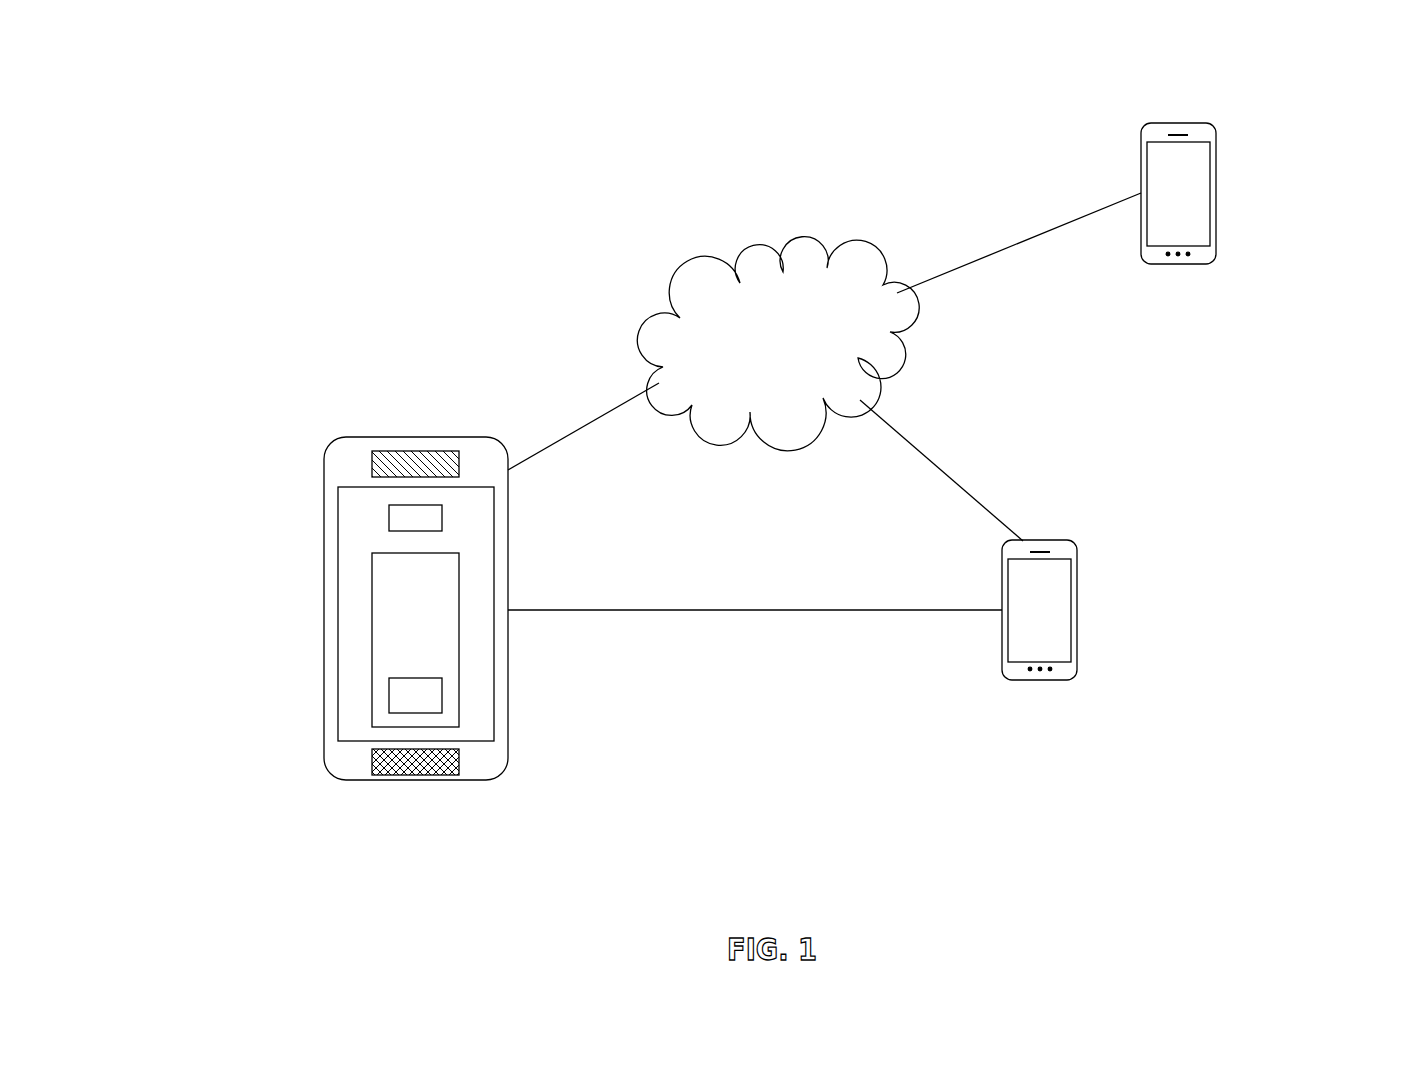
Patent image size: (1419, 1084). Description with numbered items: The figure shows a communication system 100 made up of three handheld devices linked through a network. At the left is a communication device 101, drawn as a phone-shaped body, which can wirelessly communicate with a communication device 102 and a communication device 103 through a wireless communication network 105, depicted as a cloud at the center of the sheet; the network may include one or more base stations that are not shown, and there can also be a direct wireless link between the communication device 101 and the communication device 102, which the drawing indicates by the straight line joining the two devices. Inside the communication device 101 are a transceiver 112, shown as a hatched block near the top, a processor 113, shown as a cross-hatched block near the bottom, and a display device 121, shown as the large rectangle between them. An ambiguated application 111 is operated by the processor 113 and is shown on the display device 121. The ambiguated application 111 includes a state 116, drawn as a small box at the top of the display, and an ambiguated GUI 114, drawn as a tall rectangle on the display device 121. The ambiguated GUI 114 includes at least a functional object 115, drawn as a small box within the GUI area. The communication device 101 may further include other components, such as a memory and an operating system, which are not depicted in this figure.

The communication system 100 is at (1072, 69).
The communication device 101 is at (415, 613).
The communication device 102 is at (1077, 645).
The communication device 103 is at (1216, 223).
The wireless communication network 105 is at (778, 344).
The ambiguated application 111 is at (350, 585).
The transceiver 112 is at (405, 456).
The processor 113 is at (405, 774).
The ambiguated GUI 114 is at (370, 640).
The functional object 115 is at (390, 698).
The state 116 is at (434, 522).
The display device 121 is at (342, 497).